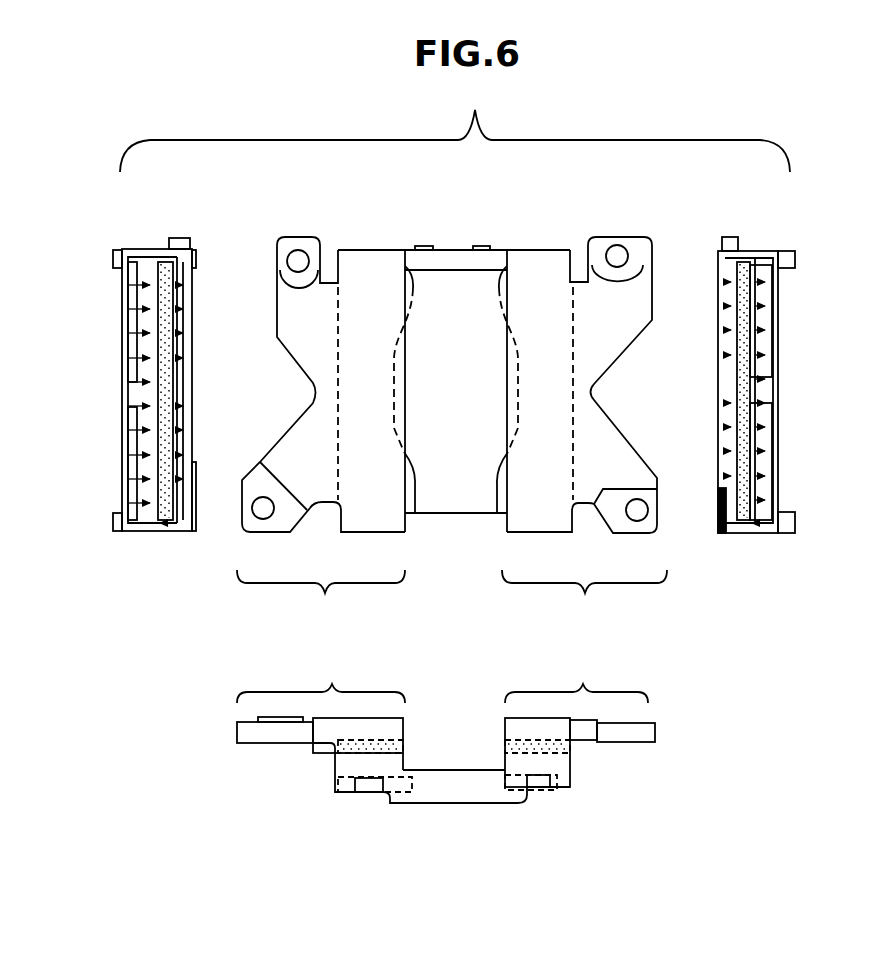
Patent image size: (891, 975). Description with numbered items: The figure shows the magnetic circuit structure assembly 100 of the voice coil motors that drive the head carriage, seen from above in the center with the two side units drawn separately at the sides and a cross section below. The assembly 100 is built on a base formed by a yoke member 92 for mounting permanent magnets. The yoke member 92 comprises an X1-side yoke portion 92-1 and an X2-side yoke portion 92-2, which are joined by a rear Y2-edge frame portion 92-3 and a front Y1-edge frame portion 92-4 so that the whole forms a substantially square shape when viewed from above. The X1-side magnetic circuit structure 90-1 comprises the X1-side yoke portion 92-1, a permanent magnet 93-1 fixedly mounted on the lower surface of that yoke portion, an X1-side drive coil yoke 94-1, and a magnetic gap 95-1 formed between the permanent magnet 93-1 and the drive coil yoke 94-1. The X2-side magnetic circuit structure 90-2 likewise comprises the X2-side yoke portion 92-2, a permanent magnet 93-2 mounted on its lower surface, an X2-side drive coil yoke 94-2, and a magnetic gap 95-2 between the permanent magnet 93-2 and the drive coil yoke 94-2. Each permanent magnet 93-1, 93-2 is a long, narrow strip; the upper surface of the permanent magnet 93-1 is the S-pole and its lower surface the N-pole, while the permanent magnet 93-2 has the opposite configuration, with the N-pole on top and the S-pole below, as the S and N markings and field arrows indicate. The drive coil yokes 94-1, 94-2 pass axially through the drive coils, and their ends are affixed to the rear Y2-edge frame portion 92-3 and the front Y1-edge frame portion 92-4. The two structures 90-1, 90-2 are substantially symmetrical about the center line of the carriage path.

The magnetic circuit structure assembly 100 is at (548, 182).
The yoke member 92 is at (396, 232).
The X1-side yoke portion 92-1 is at (527, 262).
The X2-side yoke portion 92-2 is at (363, 262).
The rear Y2-edge frame portion 92-3 is at (455, 518).
The front Y1-edge frame portion 92-4 is at (452, 270).
The X1-side magnetic circuit structure 90-1 is at (773, 211).
The X2-side magnetic circuit structure 90-2 is at (224, 538).
The permanent magnet 93-1 is at (742, 370).
The permanent magnet 93-2 is at (165, 345).
The X1-side drive coil yoke 94-1 is at (777, 328).
The X2-side drive coil yoke 94-2 is at (127, 473).
The magnetic gap 95-1 is at (768, 416).
The magnetic gap 95-2 is at (143, 413).